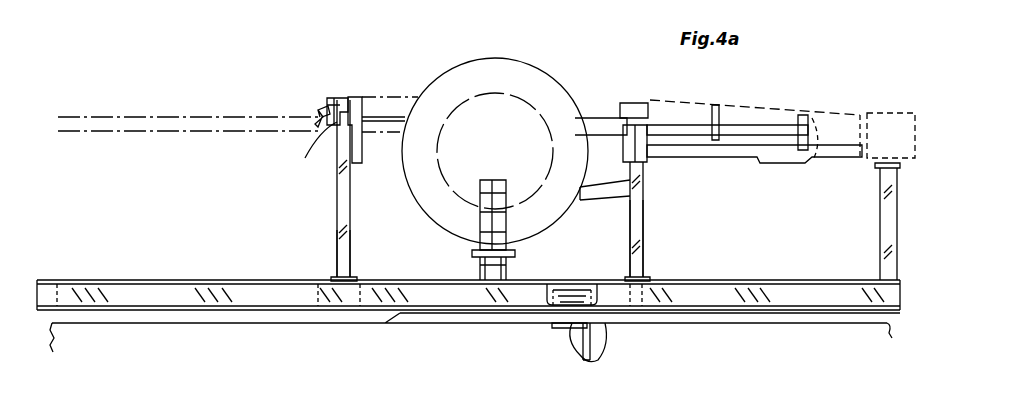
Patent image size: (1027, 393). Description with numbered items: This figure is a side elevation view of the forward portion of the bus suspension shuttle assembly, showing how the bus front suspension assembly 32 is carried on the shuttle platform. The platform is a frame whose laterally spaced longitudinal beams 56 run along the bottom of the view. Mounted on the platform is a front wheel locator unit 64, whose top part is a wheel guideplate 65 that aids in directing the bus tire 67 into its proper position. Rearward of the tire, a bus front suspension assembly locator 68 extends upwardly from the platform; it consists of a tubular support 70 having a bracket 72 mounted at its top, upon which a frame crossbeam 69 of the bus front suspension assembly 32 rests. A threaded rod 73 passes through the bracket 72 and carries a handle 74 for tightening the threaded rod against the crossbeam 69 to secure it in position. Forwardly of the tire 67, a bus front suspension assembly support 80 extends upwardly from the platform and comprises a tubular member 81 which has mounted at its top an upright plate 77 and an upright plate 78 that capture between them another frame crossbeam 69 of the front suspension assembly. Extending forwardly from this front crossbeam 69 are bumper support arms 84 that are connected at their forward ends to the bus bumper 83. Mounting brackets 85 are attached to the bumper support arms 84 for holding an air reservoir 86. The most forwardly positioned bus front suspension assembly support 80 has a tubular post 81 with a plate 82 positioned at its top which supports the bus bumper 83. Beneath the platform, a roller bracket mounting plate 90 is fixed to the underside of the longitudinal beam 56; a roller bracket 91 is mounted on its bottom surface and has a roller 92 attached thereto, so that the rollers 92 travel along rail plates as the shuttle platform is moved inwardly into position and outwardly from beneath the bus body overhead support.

The bus front suspension assembly 32 is at (582, 92).
The longitudinal beam 56 is at (778, 283).
The front wheel locator unit 64 is at (480, 226).
The wheel guideplate 65 is at (500, 186).
The bus tire 67 is at (500, 60).
The bus front suspension assembly locator 68 is at (332, 203).
The frame crossbeam 69 is at (360, 98).
The tubular support 70 is at (340, 238).
The bracket 72 is at (305, 158).
The threaded rod 73 is at (336, 98).
The handle 74 is at (318, 112).
The upright plate 77 is at (632, 108).
The upright plate 78 is at (665, 125).
The bus front suspension assembly support 80 is at (652, 254).
The tubular member 81 is at (646, 218).
The plate 82 is at (880, 178).
The bus bumper 83 is at (897, 113).
The bumper support arm 84 is at (706, 152).
The mounting bracket 85 is at (716, 105).
The air reservoir 86 is at (758, 100).
The roller bracket mounting plate 90 is at (537, 296).
The roller bracket 91 is at (548, 324).
The roller 92 is at (608, 300).